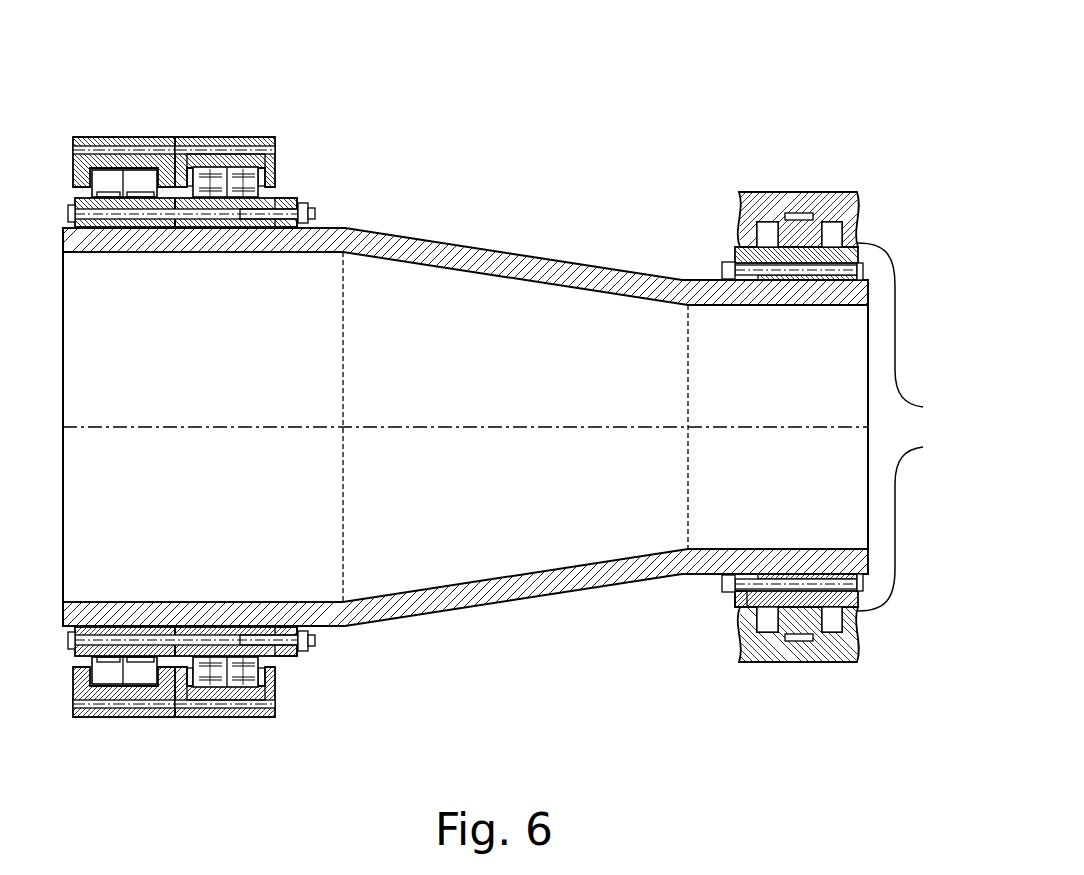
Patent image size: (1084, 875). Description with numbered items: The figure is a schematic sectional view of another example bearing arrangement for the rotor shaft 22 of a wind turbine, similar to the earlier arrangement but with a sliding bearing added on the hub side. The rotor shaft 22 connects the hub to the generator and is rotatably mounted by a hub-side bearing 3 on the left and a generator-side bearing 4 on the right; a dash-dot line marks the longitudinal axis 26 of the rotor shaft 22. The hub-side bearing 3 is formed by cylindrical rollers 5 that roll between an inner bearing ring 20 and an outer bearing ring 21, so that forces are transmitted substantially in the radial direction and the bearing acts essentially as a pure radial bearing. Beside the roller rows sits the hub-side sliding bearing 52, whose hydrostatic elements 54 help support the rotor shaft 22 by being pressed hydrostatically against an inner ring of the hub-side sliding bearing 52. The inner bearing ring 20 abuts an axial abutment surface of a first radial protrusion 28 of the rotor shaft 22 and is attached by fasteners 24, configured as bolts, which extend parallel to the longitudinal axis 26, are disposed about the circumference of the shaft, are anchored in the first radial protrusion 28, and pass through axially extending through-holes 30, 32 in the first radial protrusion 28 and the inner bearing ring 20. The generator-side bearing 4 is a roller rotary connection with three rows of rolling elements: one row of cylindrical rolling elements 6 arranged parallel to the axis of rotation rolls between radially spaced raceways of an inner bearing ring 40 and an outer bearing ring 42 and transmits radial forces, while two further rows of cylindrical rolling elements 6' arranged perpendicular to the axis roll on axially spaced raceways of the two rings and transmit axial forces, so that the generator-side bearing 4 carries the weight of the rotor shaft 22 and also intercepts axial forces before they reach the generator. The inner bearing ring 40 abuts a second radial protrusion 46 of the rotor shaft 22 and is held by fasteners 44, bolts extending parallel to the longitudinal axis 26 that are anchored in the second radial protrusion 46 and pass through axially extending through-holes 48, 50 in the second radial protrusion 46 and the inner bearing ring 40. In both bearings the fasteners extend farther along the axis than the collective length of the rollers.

The hub-side bearing 3 is at (208, 124).
The generator-side bearing 4 is at (909, 427).
The cylindrical rollers 5 is at (247, 182).
The cylindrical rolling elements 6 is at (798, 180).
The cylindrical rolling elements 6' is at (805, 373).
The inner bearing ring 20 is at (277, 196).
The outer bearing ring 21 is at (230, 162).
The rotor shaft 22 is at (500, 263).
The fasteners 24 is at (313, 210).
The longitudinal axis 26 is at (482, 427).
The first radial protrusion 28 is at (292, 197).
The axially extending through-hole 30 is at (280, 215).
The axially extending through-hole 32 is at (198, 215).
The inner bearing ring 40 is at (738, 605).
The outer bearing ring 42 is at (792, 662).
The fasteners 44 is at (722, 585).
The second radial protrusion 46 is at (733, 597).
The axially extending through-hole 48 is at (747, 582).
The axially extending through-hole 50 is at (808, 590).
The hub-side sliding bearing 52 is at (132, 126).
The hydrostatic elements 54 is at (105, 178).